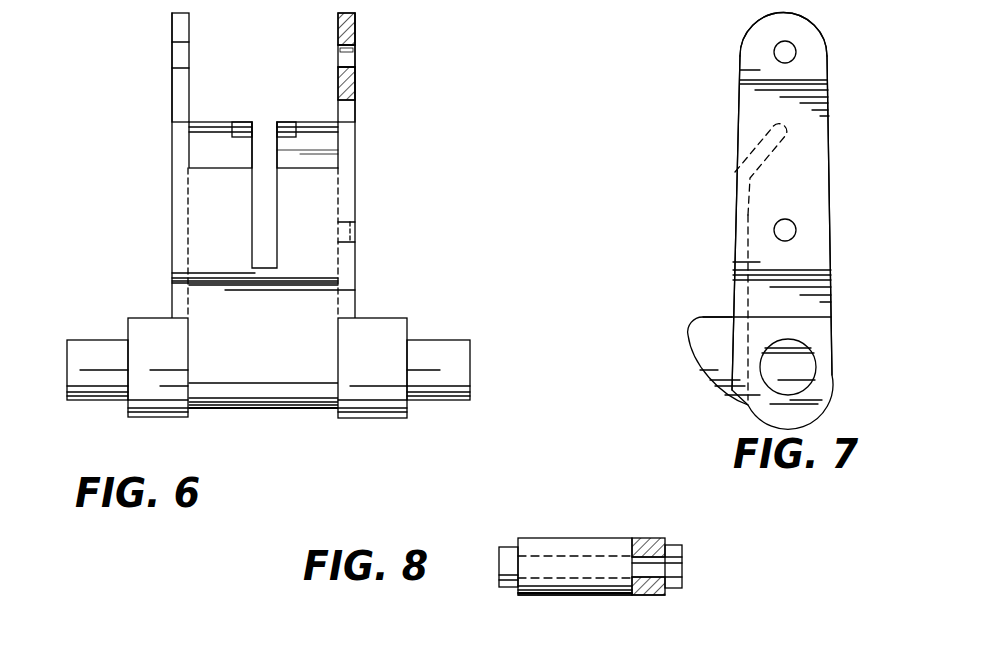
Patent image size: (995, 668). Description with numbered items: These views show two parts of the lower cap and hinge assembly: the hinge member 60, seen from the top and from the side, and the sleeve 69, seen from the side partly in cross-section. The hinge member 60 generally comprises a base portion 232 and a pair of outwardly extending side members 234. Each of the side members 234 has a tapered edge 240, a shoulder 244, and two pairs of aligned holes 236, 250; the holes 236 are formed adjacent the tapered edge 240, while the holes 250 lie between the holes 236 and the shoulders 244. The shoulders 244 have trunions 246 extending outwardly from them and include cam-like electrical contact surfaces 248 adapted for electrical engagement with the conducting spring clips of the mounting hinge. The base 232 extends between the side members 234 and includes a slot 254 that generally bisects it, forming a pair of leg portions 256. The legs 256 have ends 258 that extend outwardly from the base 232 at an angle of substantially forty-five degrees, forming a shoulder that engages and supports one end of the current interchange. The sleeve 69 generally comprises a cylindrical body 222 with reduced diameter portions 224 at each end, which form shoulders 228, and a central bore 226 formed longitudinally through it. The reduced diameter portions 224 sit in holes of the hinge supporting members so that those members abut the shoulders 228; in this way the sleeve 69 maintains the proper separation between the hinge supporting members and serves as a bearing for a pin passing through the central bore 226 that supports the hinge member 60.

In FIG. 6, the hinge member 60 is at (309, 165).
In FIG. 7, the hinge member 60 is at (840, 133).
In FIG. 8, the sleeve 69 is at (583, 533).
In FIG. 8, the cylindrical body 222 is at (648, 538).
In FIG. 8, the reduced diameter portions 224 is at (506, 545).
In FIG. 8, the central bore 226 is at (683, 568).
In FIG. 8, the shoulders 228 is at (518, 595).
In FIG. 6, the base portion 232 is at (290, 345).
In FIG. 7, the base portion 232 is at (732, 278).
In FIG. 6, the side members 234 is at (175, 102).
In FIG. 7, the side members 234 is at (805, 197).
In FIG. 6, the holes 236 is at (358, 44).
In FIG. 7, the holes 236 is at (798, 52).
In FIG. 7, the tapered edge 240 is at (740, 56).
In FIG. 6, the shoulder 244 is at (160, 415).
In FIG. 7, the shoulder 244 is at (815, 333).
In FIG. 6, the trunions 246 is at (90, 352).
In FIG. 7, the trunions 246 is at (795, 377).
In FIG. 7, the cam-like electrical contact surfaces 248 is at (710, 376).
In FIG. 6, the holes 250 is at (355, 226).
In FIG. 7, the holes 250 is at (797, 236).
In FIG. 6, the slot 254 is at (258, 222).
In FIG. 6, the leg portions 256 is at (195, 184).
In FIG. 6, the ends 258 is at (290, 122).
In FIG. 7, the ends 258 is at (728, 135).